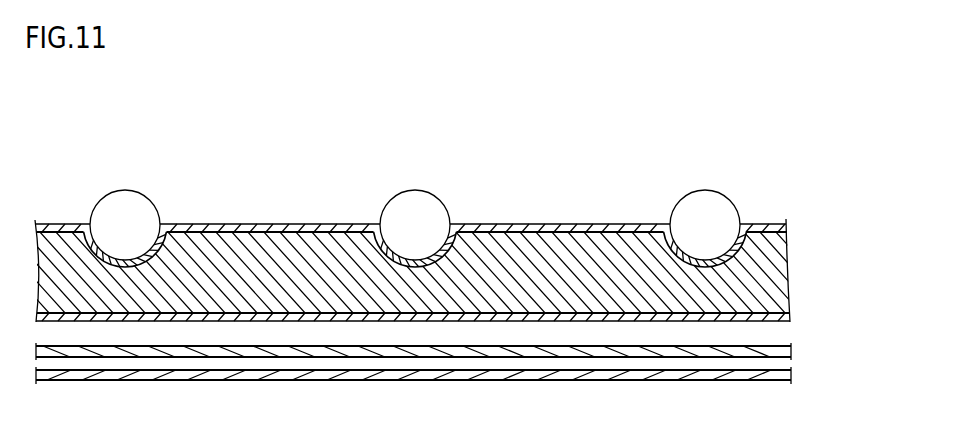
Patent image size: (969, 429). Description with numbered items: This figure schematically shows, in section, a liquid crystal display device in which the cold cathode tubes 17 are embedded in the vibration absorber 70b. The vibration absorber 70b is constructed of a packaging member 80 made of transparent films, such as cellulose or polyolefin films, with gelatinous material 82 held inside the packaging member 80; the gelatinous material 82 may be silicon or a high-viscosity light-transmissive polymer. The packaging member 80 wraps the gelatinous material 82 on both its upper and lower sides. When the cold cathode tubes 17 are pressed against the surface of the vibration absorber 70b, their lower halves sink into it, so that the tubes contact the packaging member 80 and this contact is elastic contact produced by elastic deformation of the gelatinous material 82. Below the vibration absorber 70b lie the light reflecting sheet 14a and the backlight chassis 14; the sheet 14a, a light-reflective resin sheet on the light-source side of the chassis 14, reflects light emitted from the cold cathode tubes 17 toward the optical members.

The backlight chassis 14 is at (791, 378).
The light reflecting sheet 14a is at (793, 354).
The cold cathode tubes 17 is at (123, 207).
The vibration absorber 70b is at (792, 256).
The packaging member 80 is at (760, 227).
The gelatinous material 82 is at (765, 283).